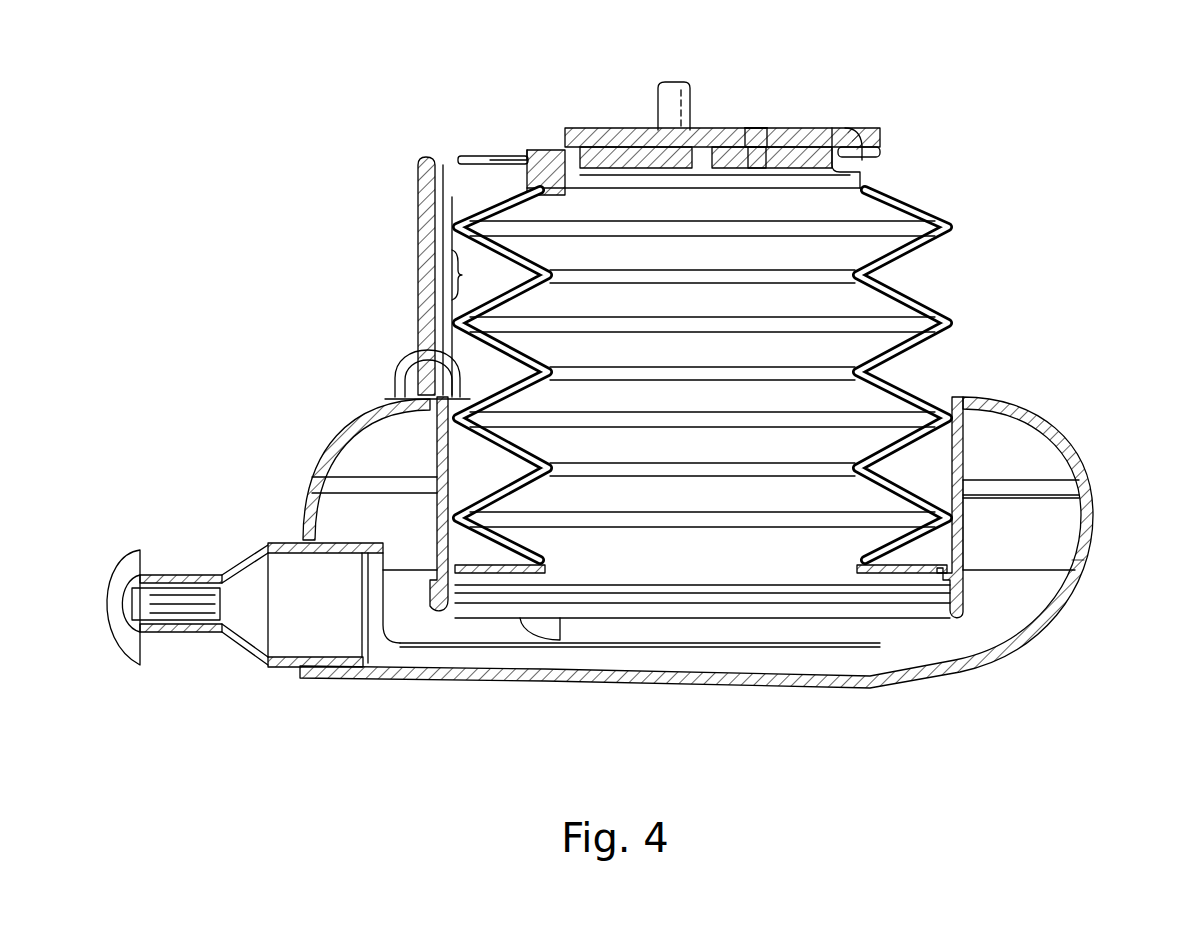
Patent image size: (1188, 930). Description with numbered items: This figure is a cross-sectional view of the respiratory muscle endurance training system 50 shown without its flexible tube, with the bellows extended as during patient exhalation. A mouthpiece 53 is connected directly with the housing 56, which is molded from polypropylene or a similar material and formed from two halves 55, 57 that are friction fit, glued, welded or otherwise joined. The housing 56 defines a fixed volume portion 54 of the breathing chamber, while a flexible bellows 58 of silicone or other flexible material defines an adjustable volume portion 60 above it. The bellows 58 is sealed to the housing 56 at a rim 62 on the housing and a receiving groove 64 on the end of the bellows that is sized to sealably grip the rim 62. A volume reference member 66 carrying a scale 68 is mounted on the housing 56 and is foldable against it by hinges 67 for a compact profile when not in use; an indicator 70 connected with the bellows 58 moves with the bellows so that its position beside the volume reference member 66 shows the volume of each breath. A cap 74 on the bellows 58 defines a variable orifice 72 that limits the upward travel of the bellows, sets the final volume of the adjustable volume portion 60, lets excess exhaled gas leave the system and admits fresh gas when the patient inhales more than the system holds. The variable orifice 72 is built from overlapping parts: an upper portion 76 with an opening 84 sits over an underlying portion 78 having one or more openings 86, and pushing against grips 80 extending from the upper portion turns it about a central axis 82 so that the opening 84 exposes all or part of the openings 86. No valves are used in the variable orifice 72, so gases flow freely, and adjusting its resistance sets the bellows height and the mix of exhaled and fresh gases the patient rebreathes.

The respiratory muscle endurance training (RMET) system 50 is at (245, 420).
The mouthpiece 53 is at (155, 633).
The fixed volume portion 54 is at (1022, 530).
The housing half 55 is at (1086, 490).
The housing 56 is at (1023, 405).
The housing half 57 is at (1084, 540).
The flexible bellows 58 is at (955, 217).
The adjustable volume portion 60 is at (775, 302).
The rim 62 is at (440, 607).
The receiving groove 64 is at (450, 603).
The volume reference member 66 is at (420, 155).
The hinge 67 is at (400, 355).
The scale 68 is at (473, 296).
The indicator 70 is at (495, 160).
The variable orifice 72 is at (756, 122).
The cap 74 is at (652, 128).
The upper portion 76 is at (820, 128).
The underlying portion 78 is at (860, 145).
The grip 80 is at (677, 102).
The central axis 82 is at (562, 142).
The opening 84 is at (760, 130).
The opening 86 is at (760, 157).